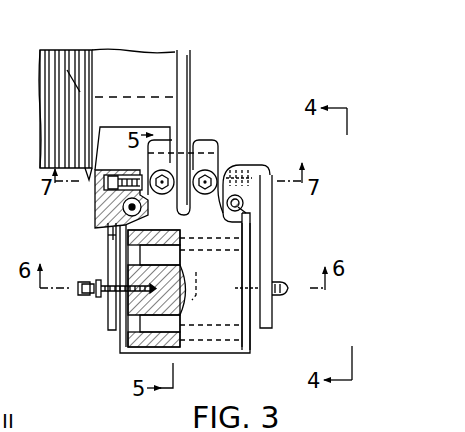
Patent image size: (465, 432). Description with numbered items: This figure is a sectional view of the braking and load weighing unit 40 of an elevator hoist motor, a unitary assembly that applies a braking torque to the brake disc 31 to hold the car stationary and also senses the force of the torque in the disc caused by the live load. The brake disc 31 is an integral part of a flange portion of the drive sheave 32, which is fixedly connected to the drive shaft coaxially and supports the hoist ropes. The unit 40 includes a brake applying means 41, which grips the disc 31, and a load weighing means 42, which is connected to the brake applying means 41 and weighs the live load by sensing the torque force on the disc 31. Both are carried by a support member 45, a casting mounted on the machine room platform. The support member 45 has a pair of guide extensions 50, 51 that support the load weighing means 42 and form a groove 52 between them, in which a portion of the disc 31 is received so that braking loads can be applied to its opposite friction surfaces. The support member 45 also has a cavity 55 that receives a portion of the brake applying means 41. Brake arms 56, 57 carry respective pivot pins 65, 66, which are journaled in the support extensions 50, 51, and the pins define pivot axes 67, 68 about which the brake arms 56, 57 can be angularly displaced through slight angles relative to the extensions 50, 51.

The brake disc 31 is at (184, 66).
The drive sheave 32 is at (50, 52).
The braking and load weighing unit 40 is at (319, 256).
The brake applying means 41 is at (252, 268).
The load weighing means 42 is at (222, 172).
The support member 45 is at (160, 353).
The guide extension 50 is at (158, 152).
The guide extension 51 is at (205, 142).
The groove 52 is at (189, 145).
The cavity 55 is at (148, 329).
The brake arm 56 is at (110, 243).
The brake arm 57 is at (262, 247).
The pivot pin 65 is at (120, 221).
The pivot pin 66 is at (245, 212).
The pivot axis 67 is at (123, 207).
The pivot axis 68 is at (244, 201).